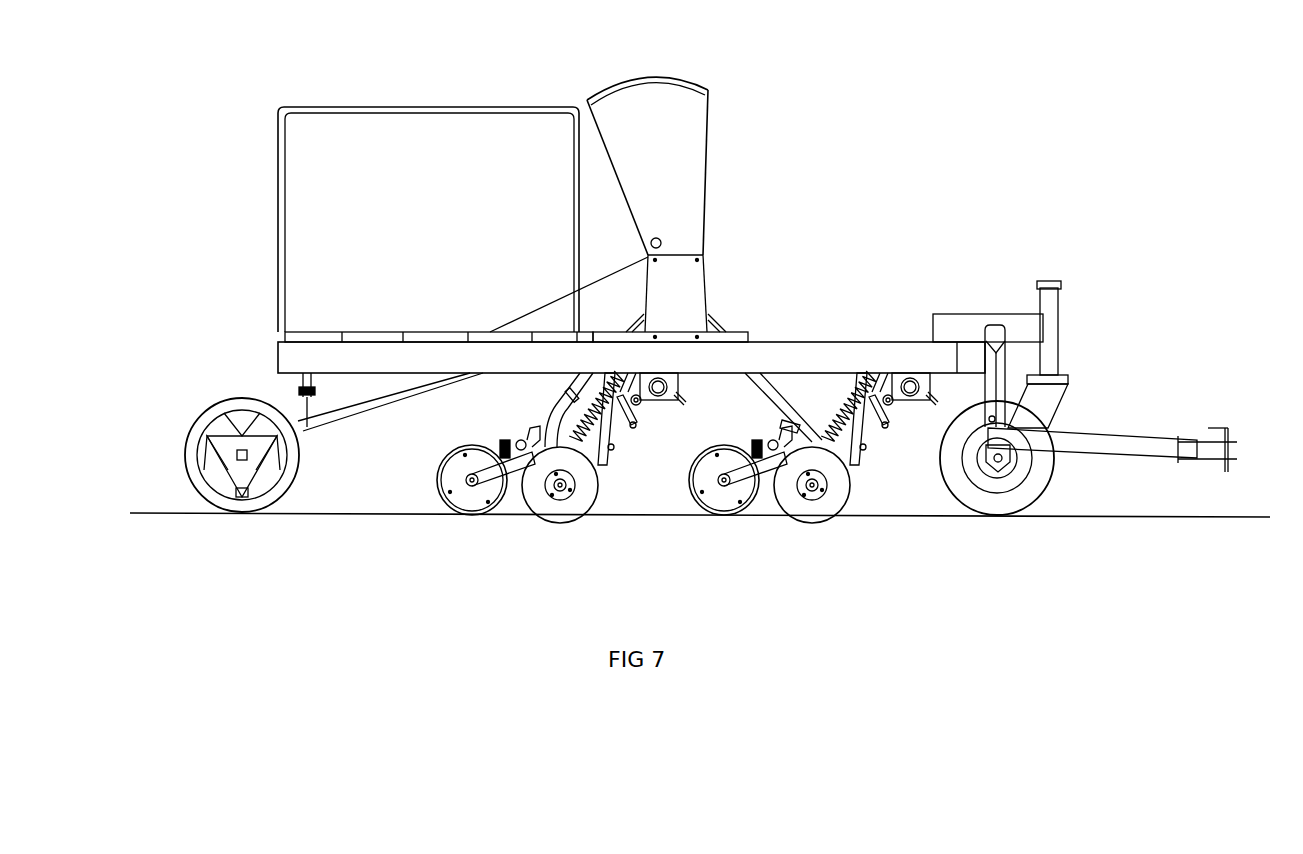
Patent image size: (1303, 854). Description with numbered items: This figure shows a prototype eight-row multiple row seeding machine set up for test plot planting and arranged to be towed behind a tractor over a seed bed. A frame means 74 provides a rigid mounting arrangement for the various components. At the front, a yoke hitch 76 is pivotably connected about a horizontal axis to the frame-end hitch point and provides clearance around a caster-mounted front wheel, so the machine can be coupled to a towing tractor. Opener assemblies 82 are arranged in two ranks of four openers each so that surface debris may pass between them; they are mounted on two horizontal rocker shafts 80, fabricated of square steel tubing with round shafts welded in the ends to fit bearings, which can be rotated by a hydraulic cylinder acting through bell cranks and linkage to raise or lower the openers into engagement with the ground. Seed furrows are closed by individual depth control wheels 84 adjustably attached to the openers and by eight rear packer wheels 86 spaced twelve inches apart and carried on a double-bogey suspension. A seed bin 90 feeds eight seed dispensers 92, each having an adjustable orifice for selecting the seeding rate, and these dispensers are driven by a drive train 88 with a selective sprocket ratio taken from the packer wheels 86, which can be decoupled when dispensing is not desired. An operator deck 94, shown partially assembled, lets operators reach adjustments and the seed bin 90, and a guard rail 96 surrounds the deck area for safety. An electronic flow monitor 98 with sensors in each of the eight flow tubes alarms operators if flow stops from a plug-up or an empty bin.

The frame means 74 is at (273, 355).
The yoke hitch 76 is at (1203, 420).
The rocker shafts 80 is at (1058, 468).
The opener assemblies 82 is at (572, 524).
The depth control wheels 84 is at (474, 517).
The packer wheels 86 is at (198, 432).
The drive train 88 is at (552, 297).
The seed bin 90 is at (712, 120).
The seed dispensers 92 is at (705, 247).
The operator deck 94 is at (368, 328).
The guard rail 96 is at (318, 107).
The electronic flow monitor 98 is at (578, 397).